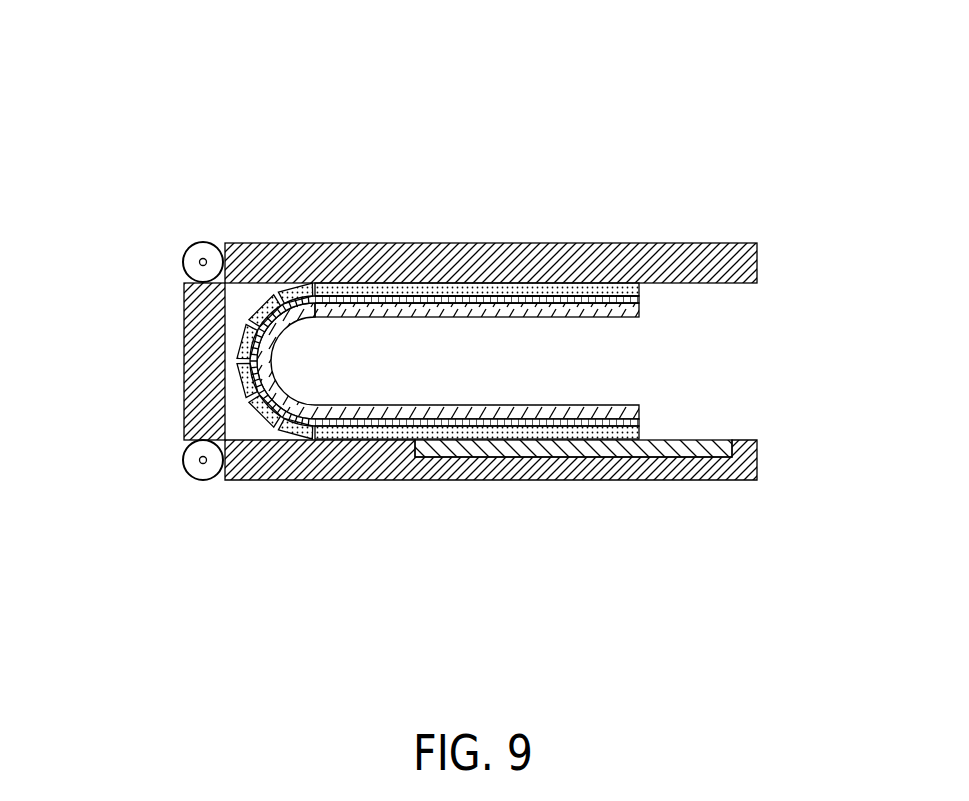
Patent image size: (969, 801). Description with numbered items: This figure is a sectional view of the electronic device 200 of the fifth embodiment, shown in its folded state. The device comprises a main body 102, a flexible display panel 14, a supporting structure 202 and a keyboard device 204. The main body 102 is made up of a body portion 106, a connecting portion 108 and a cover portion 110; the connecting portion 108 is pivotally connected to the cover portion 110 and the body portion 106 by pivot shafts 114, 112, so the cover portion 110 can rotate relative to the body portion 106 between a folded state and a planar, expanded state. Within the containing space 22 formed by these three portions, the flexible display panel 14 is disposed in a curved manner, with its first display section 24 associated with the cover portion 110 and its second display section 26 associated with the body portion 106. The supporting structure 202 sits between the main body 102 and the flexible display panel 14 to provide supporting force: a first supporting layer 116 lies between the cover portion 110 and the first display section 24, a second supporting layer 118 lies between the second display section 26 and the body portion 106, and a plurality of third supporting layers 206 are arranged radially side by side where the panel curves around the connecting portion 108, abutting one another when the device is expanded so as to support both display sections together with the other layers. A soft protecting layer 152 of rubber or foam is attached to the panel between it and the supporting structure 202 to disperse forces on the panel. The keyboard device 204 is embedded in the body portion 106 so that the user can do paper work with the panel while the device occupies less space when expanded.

The electronic device 200 is at (759, 100).
The main body 102 is at (128, 277).
The cover portion 110 is at (250, 283).
The connecting portion 108 is at (197, 361).
The body portion 106 is at (250, 450).
The keyboard device 204 is at (692, 446).
The pivot shaft 114 is at (202, 252).
The pivot shaft 112 is at (199, 473).
The containing space 22 is at (752, 338).
The flexible display panel 14 is at (605, 197).
The second display section 26 is at (530, 413).
The first display section 24 is at (580, 320).
The supporting structure 202 is at (438, 197).
The second supporting layer 118 is at (357, 420).
The first supporting layer 116 is at (411, 296).
The third supporting layer 206 is at (297, 284).
The soft protecting layer 152 is at (636, 299).